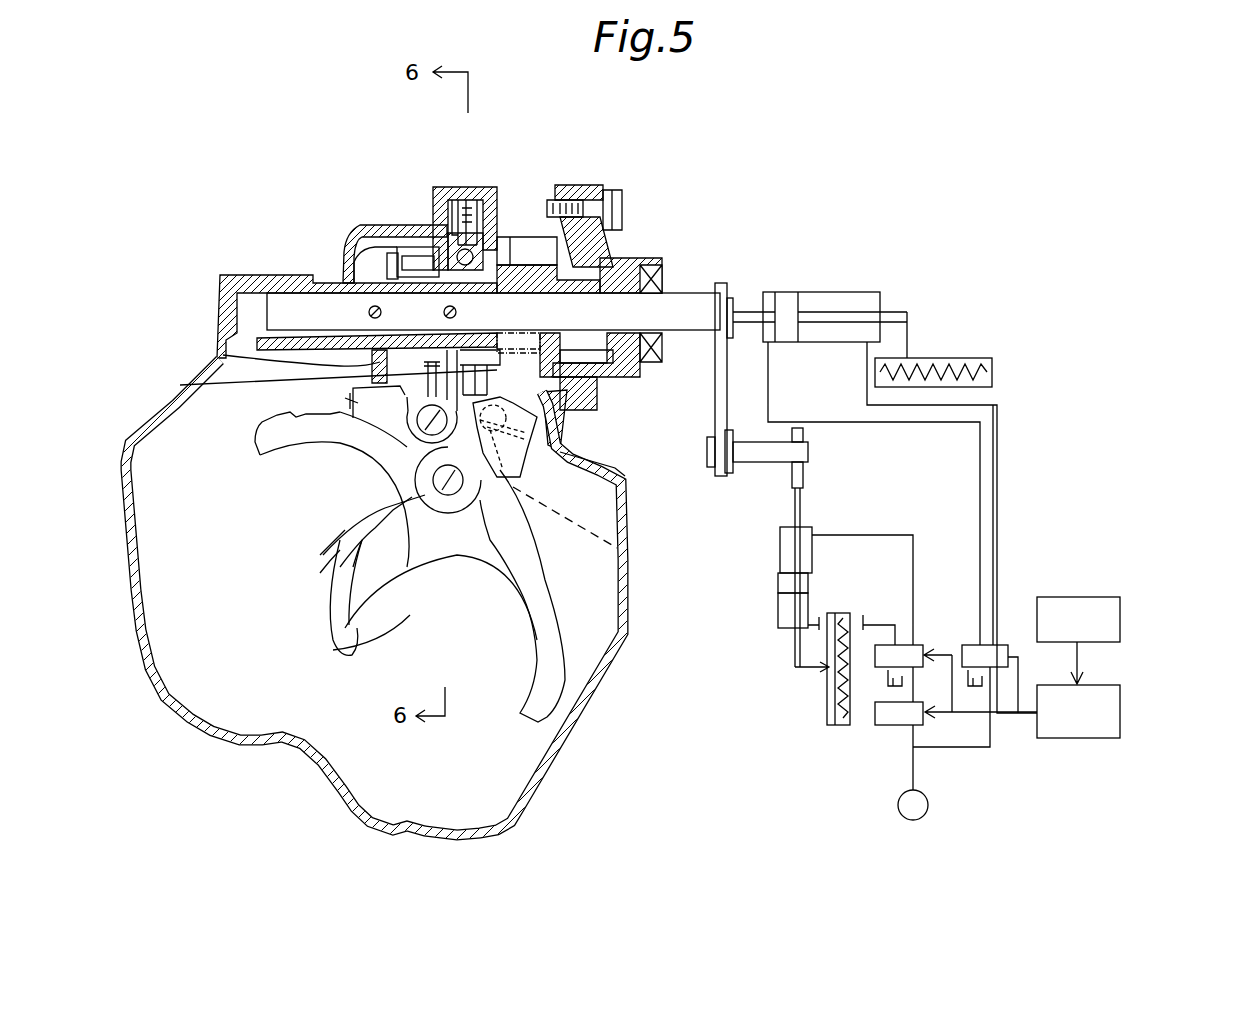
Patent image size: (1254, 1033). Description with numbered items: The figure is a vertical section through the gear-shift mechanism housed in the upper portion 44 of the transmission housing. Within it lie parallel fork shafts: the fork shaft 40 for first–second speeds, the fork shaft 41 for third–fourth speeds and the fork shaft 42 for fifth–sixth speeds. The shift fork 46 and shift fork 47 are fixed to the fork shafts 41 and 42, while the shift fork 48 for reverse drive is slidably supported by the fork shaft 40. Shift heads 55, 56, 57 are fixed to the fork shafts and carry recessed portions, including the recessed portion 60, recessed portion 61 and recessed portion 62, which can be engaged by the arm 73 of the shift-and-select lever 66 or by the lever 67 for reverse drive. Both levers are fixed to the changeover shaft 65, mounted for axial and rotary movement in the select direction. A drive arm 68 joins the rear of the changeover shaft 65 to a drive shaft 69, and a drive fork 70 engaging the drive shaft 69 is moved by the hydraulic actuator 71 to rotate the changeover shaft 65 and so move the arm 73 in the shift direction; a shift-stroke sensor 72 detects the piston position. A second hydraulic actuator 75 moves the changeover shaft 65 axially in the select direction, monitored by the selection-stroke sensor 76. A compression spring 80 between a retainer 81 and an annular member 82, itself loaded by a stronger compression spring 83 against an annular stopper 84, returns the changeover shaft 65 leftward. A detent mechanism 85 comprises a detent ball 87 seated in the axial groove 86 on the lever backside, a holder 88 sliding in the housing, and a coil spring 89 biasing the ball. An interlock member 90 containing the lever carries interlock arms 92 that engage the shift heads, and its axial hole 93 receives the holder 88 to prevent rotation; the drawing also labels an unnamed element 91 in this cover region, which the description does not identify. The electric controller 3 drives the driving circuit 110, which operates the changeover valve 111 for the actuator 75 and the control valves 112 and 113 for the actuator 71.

The electric controller 3 is at (1102, 600).
The fork shaft for 1st–2nd speeds 40 is at (435, 458).
The fork shaft for 3rd–4th speeds 41 is at (352, 547).
The fork shaft for 5th–6th speeds 42 is at (619, 549).
The upper portion of the gear transmission housing 44 is at (124, 462).
The shift fork for 3rd–4th speeds 46 is at (407, 613).
The shift fork for 5th–6th speeds 47 is at (547, 633).
The shift fork for reverse drive 48 is at (332, 415).
The shift head 55 is at (358, 531).
The shift head 56 is at (497, 530).
The shift head 57 is at (617, 493).
The recessed portion 60 is at (570, 417).
The recessed portion 61 is at (593, 383).
The recessed portion 62 is at (420, 435).
The changeover shaft 65 is at (695, 308).
The shift-and-select lever 66 is at (220, 355).
The lever for reverse drive 67 is at (372, 282).
The drive arm 68 is at (722, 362).
The drive shaft 69 is at (767, 457).
The drive fork 70 is at (803, 476).
The hydraulic actuator 71 is at (780, 555).
The shift-stroke sensor 72 is at (823, 697).
The arm of the shift-and-select lever 73 is at (180, 385).
The hydraulic actuator 75 is at (833, 300).
The selection-stroke sensor 76 is at (963, 360).
The compression spring 80 is at (522, 268).
The retainer 81 is at (508, 245).
The annular member 82 is at (598, 268).
The compression spring 83 is at (640, 276).
The annular stopper 84 is at (532, 245).
The detent mechanism 85 is at (476, 172).
The axial groove 86 is at (424, 255).
The detent ball 87 is at (457, 252).
The holder 88 is at (482, 188).
The coil spring 89 is at (462, 225).
The interlock member 90 is at (384, 262).
The cover 91 is at (372, 266).
The interlock arms 92 is at (350, 403).
The axial hole 93 is at (394, 252).
The driving circuit 110 is at (1105, 693).
The changeover valve 111 is at (1002, 647).
The control valve 112 is at (920, 648).
The control valve 113 is at (885, 720).